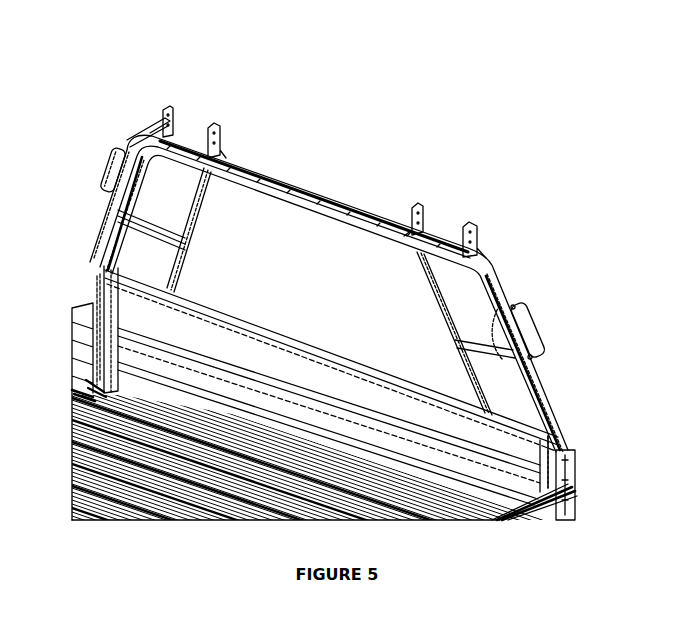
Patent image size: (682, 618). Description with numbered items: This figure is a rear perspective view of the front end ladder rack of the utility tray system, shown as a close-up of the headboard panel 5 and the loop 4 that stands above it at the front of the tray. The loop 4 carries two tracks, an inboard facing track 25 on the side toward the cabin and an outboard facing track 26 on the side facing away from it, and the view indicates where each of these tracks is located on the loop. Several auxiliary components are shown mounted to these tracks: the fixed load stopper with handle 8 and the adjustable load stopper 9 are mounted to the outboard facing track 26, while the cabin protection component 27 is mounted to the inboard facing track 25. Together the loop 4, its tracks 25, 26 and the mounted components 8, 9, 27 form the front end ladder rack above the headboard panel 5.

The loop 4 is at (354, 229).
The headboard panel 5 is at (358, 403).
The fixed load stopper with handle 8 is at (309, 182).
The adjustable load stopper 9 is at (479, 233).
The inboard facing track 25 is at (118, 199).
The outboard facing track 26 is at (348, 199).
The cabin protection component 27 is at (498, 304).